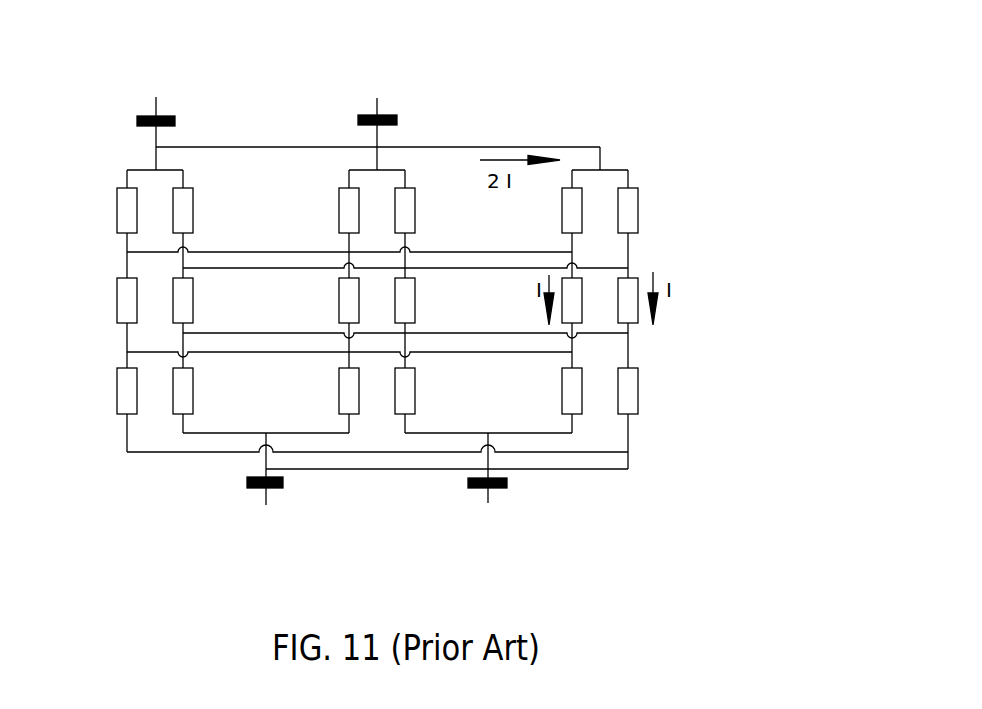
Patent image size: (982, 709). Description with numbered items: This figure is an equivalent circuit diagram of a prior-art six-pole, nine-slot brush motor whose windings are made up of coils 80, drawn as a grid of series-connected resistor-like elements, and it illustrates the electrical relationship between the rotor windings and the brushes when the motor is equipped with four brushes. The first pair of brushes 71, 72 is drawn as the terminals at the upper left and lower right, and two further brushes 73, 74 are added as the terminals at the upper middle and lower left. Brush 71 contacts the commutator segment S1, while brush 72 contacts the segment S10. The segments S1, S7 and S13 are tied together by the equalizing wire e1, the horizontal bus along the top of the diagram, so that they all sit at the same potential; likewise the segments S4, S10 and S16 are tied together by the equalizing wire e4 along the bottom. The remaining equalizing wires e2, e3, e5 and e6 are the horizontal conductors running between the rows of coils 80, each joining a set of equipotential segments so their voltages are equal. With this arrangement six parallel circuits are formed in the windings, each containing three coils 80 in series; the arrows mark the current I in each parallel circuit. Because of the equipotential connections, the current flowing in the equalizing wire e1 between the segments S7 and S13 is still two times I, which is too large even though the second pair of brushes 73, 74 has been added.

The brush 71 is at (137, 118).
The brush 72 is at (500, 488).
The brush 73 is at (362, 116).
The brush 74 is at (277, 488).
The coil 80 is at (628, 212).
The segment S1 is at (155, 155).
The segment S7 is at (375, 161).
The segment S13 is at (602, 157).
The segment S16 is at (142, 453).
The segment S4 is at (328, 433).
The segment S10 is at (557, 435).
The equalizing wire e1 is at (228, 147).
The equalizing wire e2 is at (473, 267).
The equalizing wire e3 is at (235, 335).
The equalizing wire e4 is at (407, 470).
The equalizing wire e5 is at (210, 353).
The equalizing wire e6 is at (440, 250).